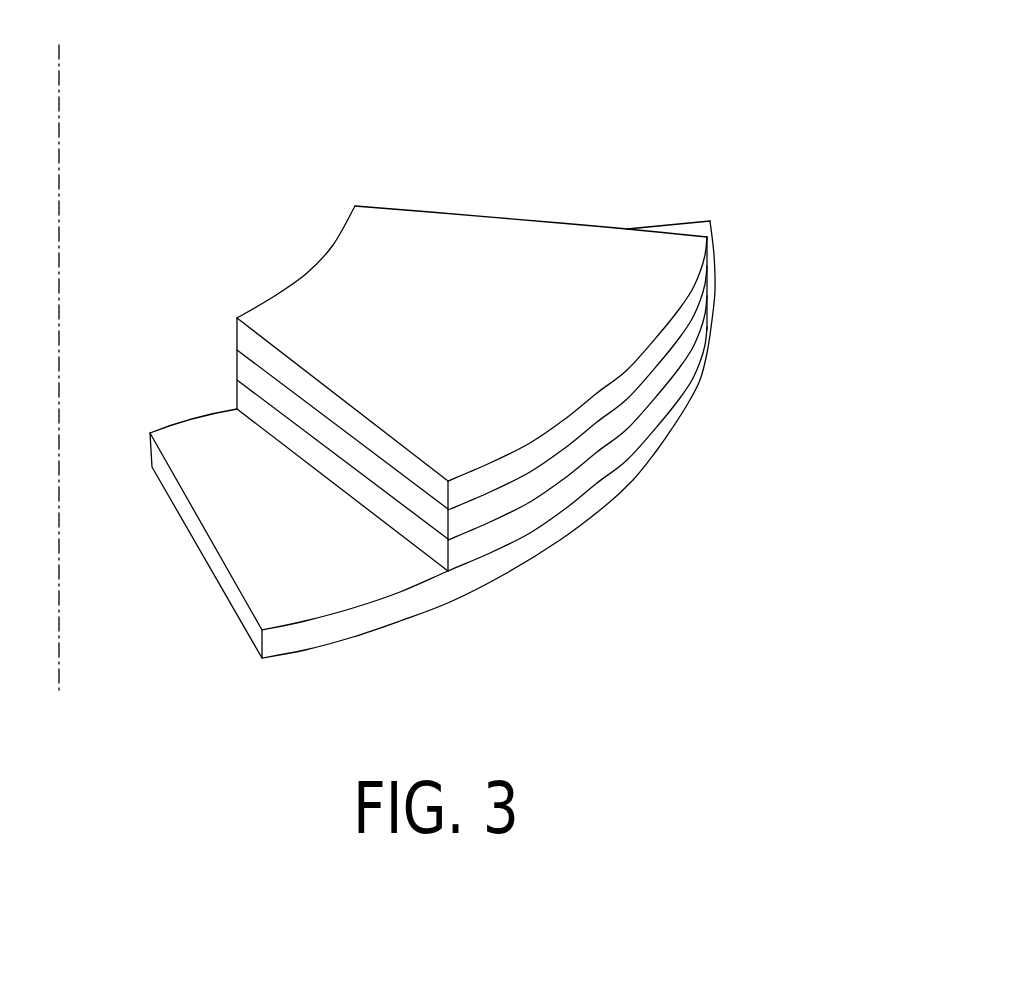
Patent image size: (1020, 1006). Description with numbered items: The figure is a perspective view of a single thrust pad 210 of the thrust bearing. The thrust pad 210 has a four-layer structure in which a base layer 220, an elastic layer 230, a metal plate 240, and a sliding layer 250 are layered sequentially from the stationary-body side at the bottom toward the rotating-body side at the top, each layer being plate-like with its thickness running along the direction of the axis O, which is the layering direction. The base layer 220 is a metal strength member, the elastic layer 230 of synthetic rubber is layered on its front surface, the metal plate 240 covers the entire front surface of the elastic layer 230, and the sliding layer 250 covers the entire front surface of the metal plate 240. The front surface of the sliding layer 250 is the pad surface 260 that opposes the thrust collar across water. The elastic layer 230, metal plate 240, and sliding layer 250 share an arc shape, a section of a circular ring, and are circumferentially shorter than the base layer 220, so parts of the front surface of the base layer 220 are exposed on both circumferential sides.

The thrust pad 210 is at (690, 118).
The base layer 220 is at (343, 625).
The elastic layer 230 is at (655, 415).
The metal plate 240 is at (675, 355).
The sliding layer 250 is at (692, 293).
The pad surface 260 is at (616, 266).
The axis O is at (60, 165).